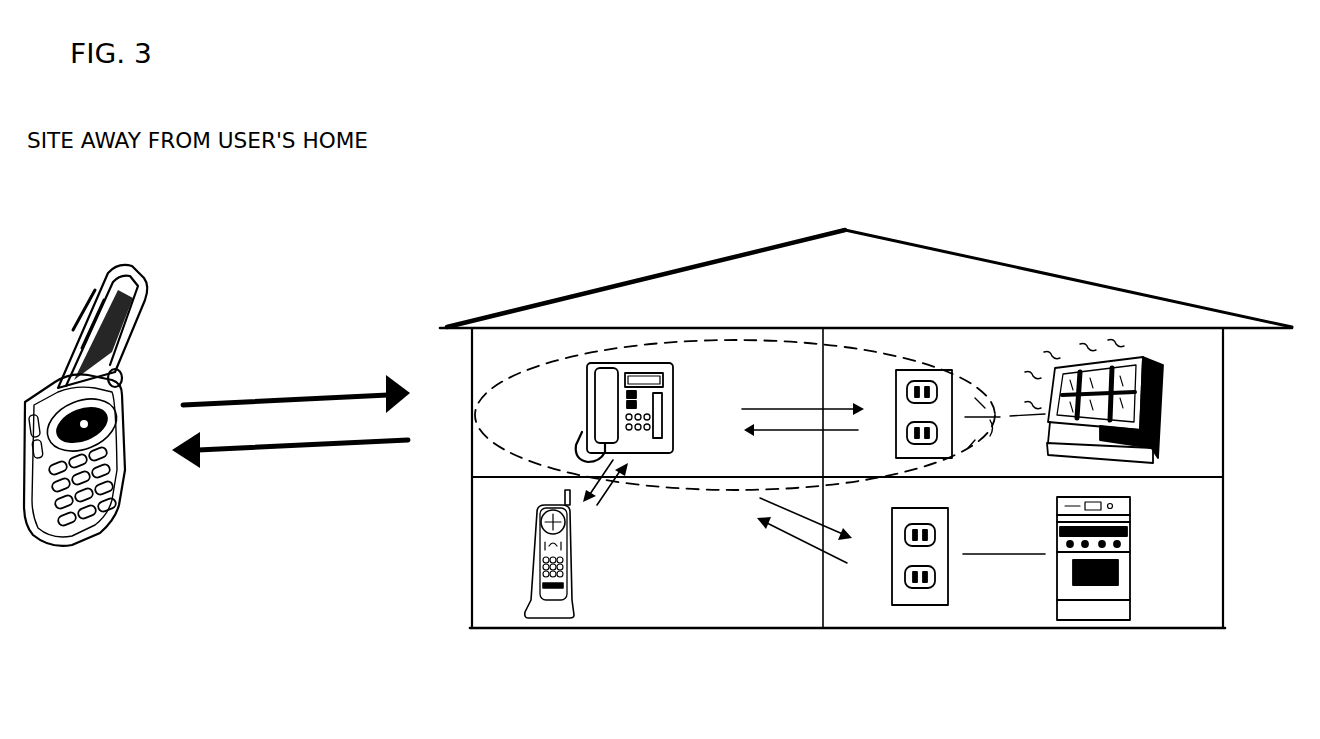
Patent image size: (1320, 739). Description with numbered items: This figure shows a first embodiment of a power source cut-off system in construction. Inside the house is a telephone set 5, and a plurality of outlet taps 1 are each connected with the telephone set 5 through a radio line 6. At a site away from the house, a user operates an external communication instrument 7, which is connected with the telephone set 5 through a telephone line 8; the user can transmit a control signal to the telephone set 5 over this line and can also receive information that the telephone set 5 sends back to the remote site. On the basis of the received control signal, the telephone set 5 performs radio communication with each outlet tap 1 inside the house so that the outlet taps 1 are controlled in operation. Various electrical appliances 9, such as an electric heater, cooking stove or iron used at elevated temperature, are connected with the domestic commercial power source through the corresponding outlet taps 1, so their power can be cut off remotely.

The outlet tap 1 is at (940, 367).
The telephone set 5 is at (652, 352).
The radio line 6 is at (775, 409).
The external communication instrument 7 is at (63, 545).
The telephone line 8 is at (255, 452).
The electrical appliance 9 is at (1160, 412).